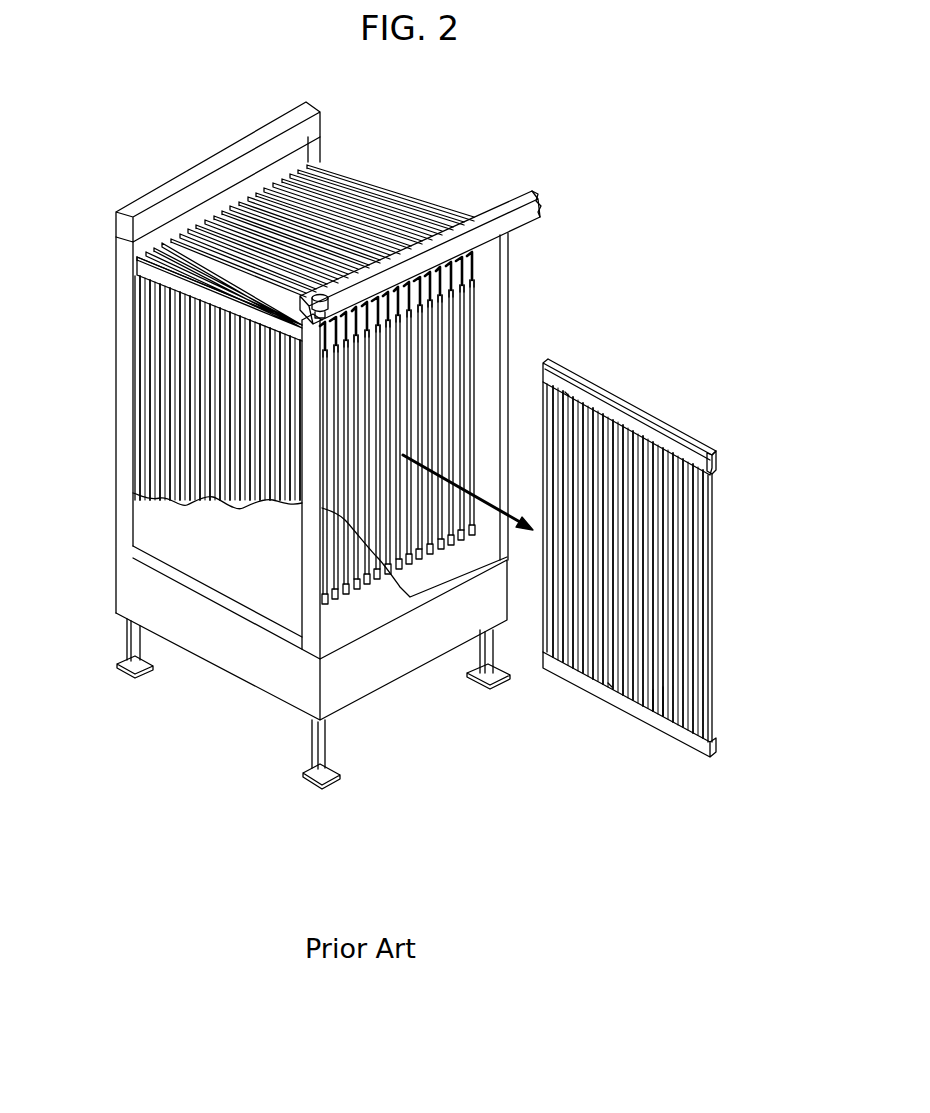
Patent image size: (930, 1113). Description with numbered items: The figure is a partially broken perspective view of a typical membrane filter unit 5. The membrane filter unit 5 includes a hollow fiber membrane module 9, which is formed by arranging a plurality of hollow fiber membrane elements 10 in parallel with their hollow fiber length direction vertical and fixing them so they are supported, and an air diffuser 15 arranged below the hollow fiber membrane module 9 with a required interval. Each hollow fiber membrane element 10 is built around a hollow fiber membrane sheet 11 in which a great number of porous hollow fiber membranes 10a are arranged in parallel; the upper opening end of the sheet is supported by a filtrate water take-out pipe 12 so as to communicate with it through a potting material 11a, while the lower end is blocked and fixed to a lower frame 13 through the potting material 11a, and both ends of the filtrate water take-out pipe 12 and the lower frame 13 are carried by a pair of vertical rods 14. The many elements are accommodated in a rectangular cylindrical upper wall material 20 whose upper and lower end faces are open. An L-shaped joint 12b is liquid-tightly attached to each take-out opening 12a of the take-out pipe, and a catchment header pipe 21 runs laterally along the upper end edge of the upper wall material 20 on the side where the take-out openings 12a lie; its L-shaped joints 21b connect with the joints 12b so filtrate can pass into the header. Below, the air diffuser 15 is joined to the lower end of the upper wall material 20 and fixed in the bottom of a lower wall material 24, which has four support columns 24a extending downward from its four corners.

The membrane filter unit 5 is at (439, 127).
The hollow fiber membrane module 9 is at (97, 413).
The hollow fiber membrane element 10 is at (353, 218).
The porous hollow fiber membrane 10a is at (663, 687).
The hollow fiber membrane sheet 11 is at (680, 567).
The potting material 11a is at (567, 395).
The filtrate water take-out pipe 12 is at (588, 393).
The take-out opening 12a is at (712, 463).
The L-shaped joint 12b is at (510, 267).
The lower frame 13 is at (590, 685).
The vertical rod 14 is at (545, 510).
The air diffuser 15 is at (99, 622).
The upper wall material 20 is at (167, 532).
The catchment header pipe 21 is at (495, 208).
The L-shaped joint 21b is at (508, 243).
The lower wall material 24 is at (213, 652).
The support column 24a is at (127, 640).